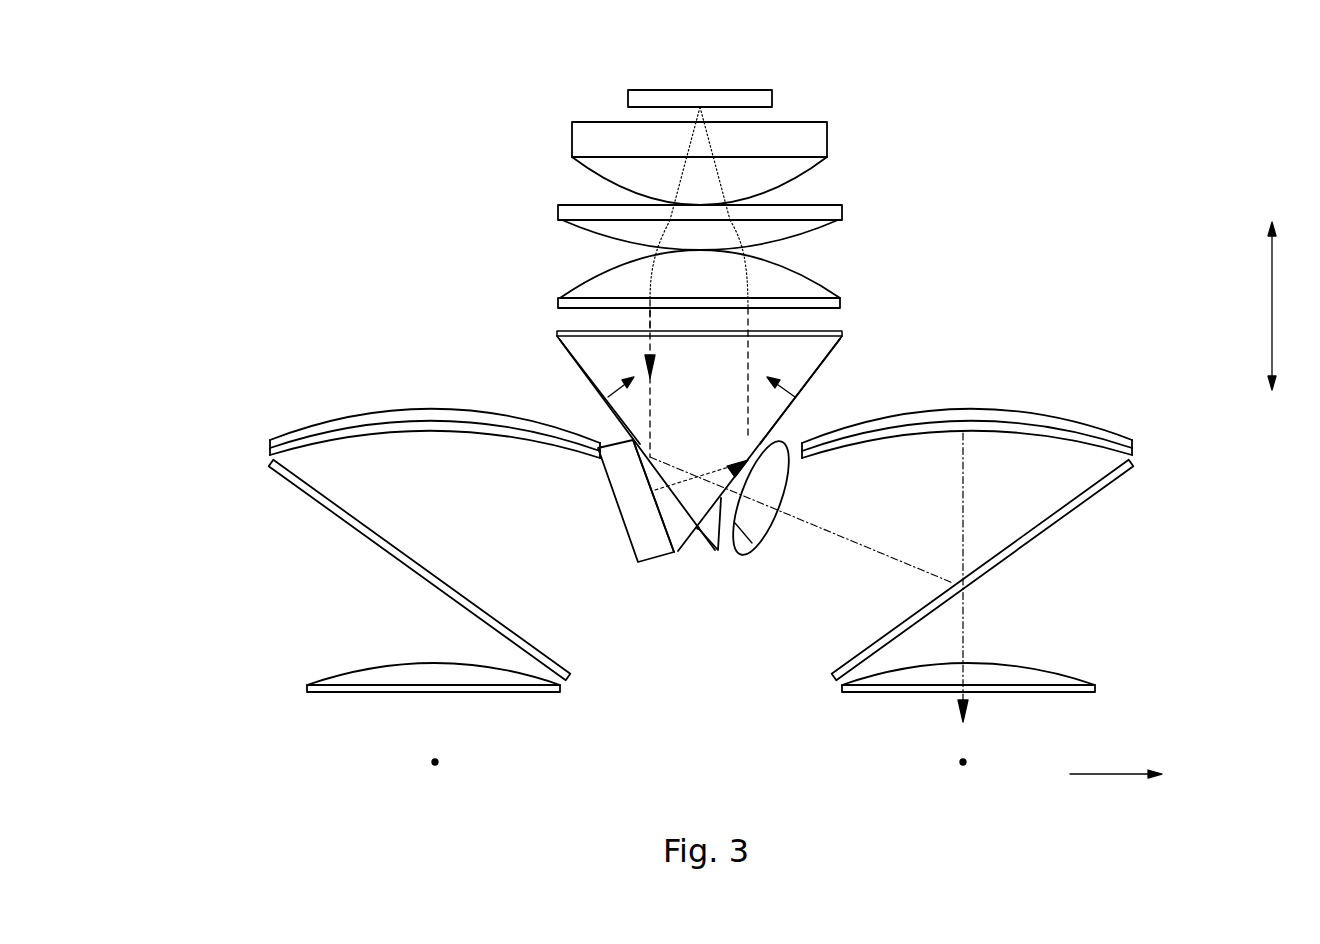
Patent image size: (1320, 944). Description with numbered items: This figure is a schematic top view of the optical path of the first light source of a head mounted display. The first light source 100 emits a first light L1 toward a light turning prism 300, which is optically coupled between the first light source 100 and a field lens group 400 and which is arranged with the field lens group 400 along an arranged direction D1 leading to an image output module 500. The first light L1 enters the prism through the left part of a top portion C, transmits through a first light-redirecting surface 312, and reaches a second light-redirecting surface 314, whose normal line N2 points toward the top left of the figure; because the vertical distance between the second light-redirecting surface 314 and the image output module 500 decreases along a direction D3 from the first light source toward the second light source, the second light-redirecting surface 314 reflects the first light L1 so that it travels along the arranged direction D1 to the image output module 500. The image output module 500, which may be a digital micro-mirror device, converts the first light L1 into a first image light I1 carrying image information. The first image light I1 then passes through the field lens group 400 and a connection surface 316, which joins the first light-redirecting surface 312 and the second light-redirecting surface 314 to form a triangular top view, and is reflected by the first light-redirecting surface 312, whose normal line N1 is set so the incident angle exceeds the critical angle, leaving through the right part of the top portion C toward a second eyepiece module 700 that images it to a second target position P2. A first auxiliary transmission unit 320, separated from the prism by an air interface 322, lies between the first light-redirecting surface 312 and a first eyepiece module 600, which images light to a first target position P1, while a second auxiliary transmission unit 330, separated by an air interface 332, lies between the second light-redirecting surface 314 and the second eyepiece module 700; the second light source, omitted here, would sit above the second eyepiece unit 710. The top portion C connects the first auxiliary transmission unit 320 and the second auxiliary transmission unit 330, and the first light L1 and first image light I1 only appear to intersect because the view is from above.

The first light source 100 is at (666, 557).
The light turning prism 300 is at (830, 352).
The first light-redirecting surface 312 is at (579, 365).
The second light-redirecting surface 314 is at (822, 362).
The connection surface 316 is at (842, 331).
The first auxiliary transmission unit 320 is at (690, 548).
The air interface 322 is at (636, 524).
The second auxiliary transmission unit 330 is at (712, 556).
The air interface 332 is at (765, 548).
The field lens group 400 is at (840, 208).
The image output module 500 is at (740, 89).
The first eyepiece module 600 is at (278, 472).
The second eyepiece module 700 is at (1122, 472).
The second eyepiece unit 710 is at (748, 542).
The top portion C is at (698, 532).
The first light L1 is at (658, 492).
The first image light I1 is at (648, 324).
The normal line of the first light-redirecting surface N1 is at (608, 397).
The normal line of the second light-redirecting surface N2 is at (795, 397).
The arranged direction D1 is at (1291, 306).
The direction D3 is at (1116, 788).
The first target position P1 is at (436, 779).
The second target position P2 is at (963, 779).